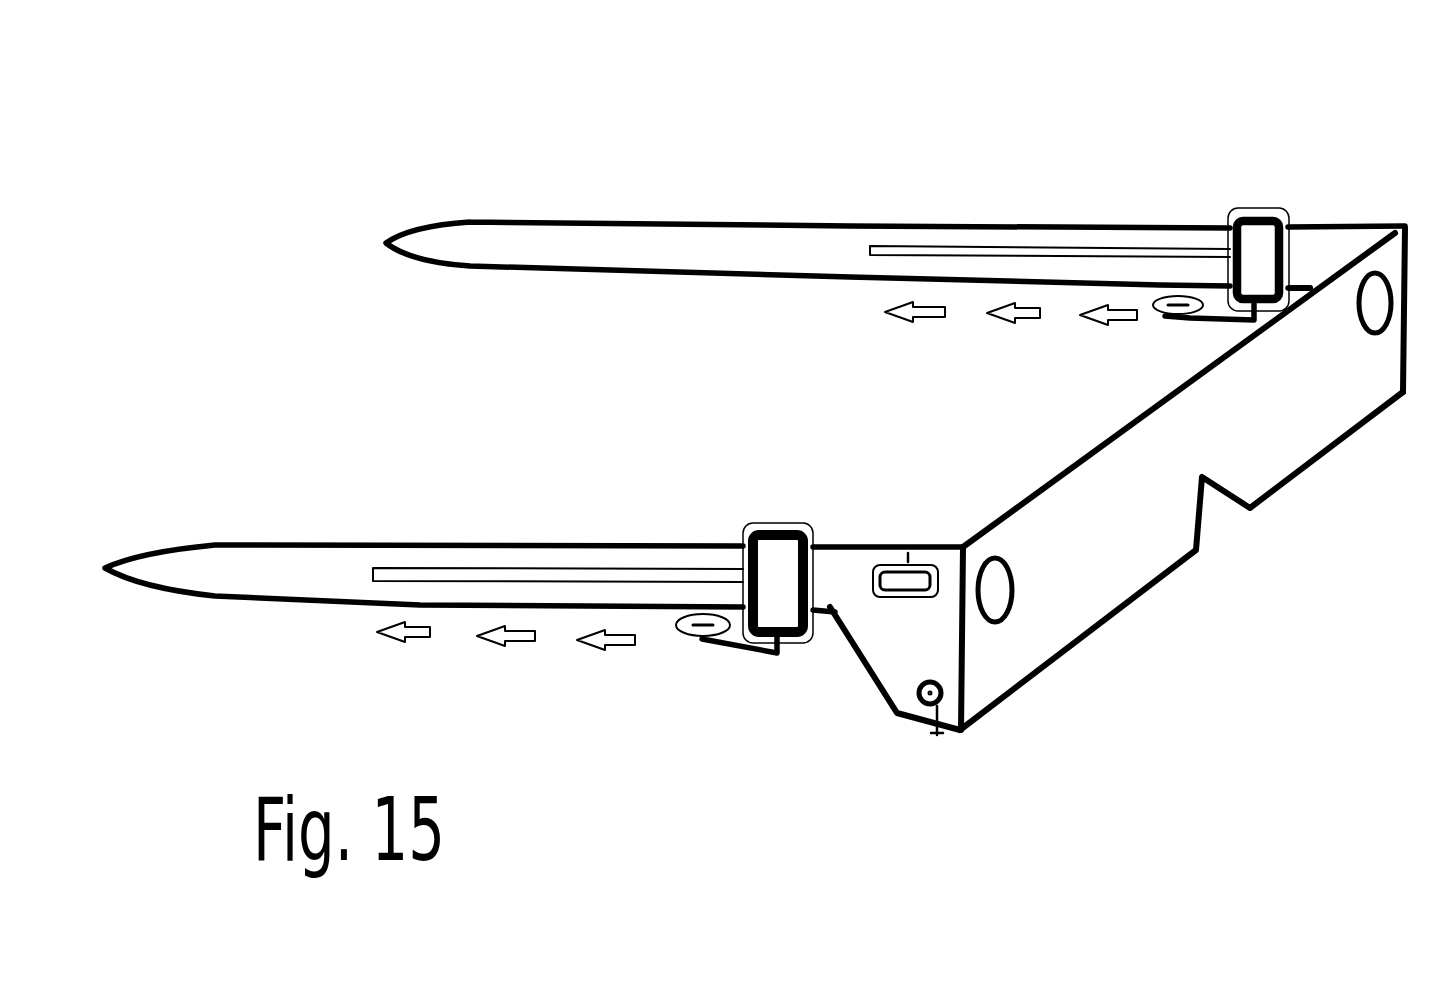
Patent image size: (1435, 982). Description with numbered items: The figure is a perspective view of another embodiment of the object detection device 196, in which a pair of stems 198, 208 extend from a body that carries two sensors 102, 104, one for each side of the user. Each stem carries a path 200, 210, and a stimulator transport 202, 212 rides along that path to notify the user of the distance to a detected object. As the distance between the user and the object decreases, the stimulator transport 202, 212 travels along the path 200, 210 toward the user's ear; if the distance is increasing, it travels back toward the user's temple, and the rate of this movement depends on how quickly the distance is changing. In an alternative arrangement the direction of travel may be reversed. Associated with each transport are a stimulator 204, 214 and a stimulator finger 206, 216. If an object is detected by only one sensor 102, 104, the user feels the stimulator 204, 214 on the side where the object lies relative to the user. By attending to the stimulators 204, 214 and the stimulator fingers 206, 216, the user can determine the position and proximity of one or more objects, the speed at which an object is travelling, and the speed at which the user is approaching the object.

The sensor 102 is at (992, 572).
The sensor 104 is at (1377, 294).
The object detection device 196 is at (1125, 678).
The stem 198 is at (439, 224).
The path 200 is at (890, 249).
The stimulator transport 202 is at (1255, 205).
The stimulator 204 is at (1157, 305).
The stimulator finger 206 is at (1179, 301).
The stem 208 is at (208, 541).
The path 210 is at (412, 570).
The stimulator transport 212 is at (768, 522).
The stimulator 214 is at (700, 624).
The stimulator finger 216 is at (700, 628).